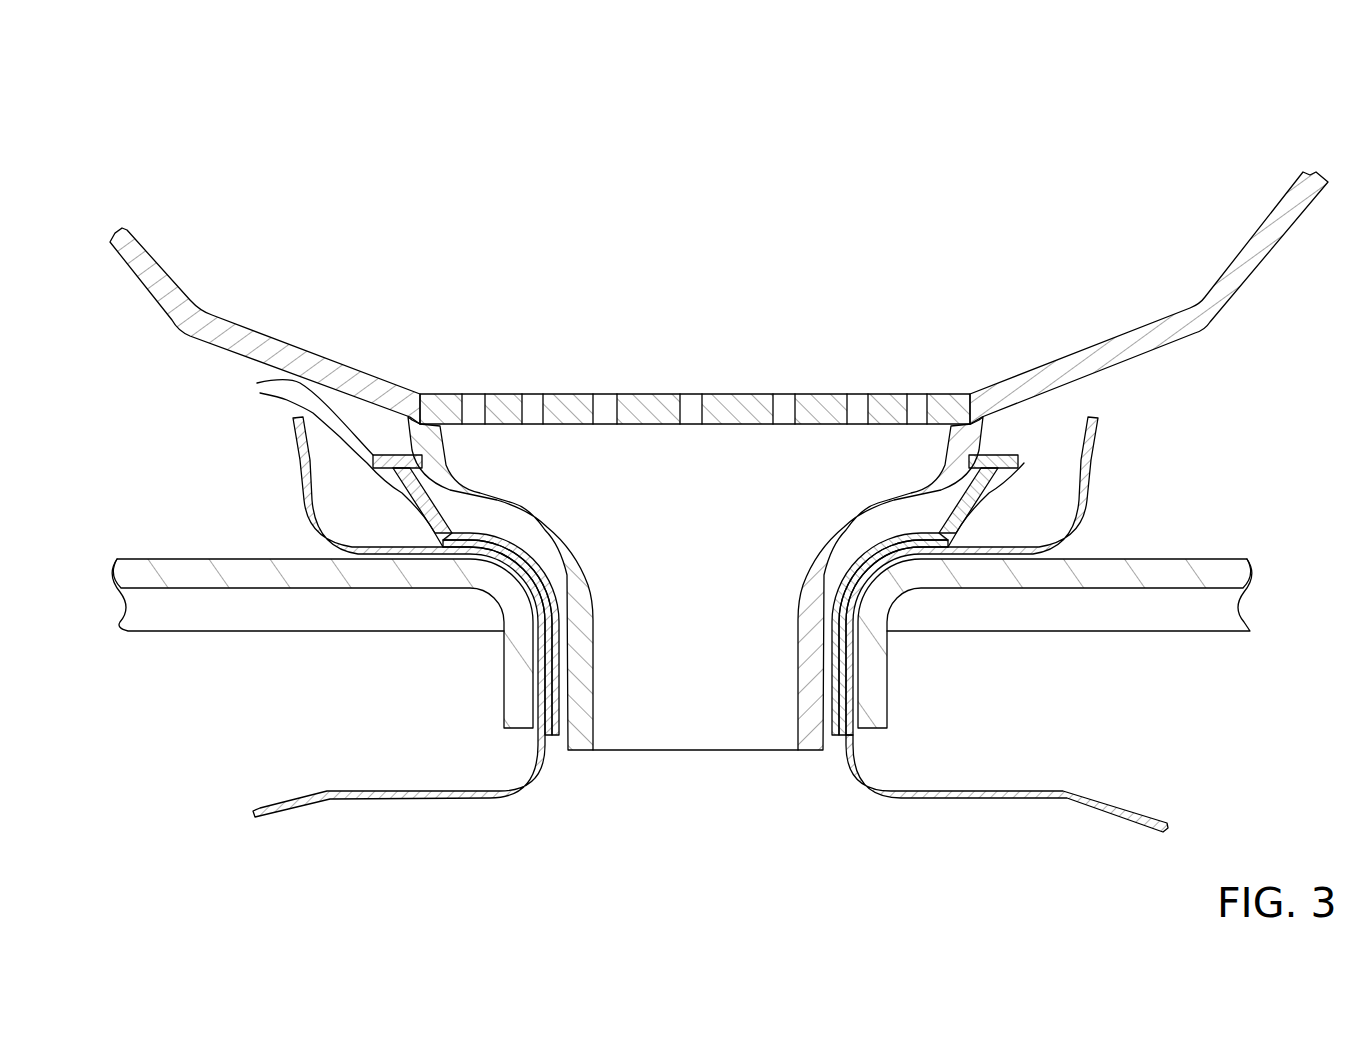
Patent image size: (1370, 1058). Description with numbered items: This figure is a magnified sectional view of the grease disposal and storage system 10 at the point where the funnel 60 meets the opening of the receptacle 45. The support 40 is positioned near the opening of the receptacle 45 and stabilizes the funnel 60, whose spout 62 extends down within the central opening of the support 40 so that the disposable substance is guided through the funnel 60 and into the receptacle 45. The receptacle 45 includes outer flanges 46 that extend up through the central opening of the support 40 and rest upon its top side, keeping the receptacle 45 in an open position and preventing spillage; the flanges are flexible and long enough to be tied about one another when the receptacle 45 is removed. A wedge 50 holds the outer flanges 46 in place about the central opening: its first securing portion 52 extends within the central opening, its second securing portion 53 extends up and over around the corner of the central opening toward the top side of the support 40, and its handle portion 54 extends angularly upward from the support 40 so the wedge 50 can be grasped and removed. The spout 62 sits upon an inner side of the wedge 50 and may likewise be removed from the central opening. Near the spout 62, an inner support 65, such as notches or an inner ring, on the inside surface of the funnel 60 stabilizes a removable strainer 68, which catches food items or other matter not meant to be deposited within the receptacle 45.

The grease disposal and storage system 10 is at (275, 155).
The support 40 is at (1158, 558).
The receptacle 45 is at (1100, 796).
The outer flanges 46 is at (300, 477).
The wedge 50 is at (260, 393).
The first securing portion 52 is at (838, 688).
The second securing portion 53 is at (1018, 455).
The handle portion 54 is at (257, 383).
The funnel 60 is at (1237, 255).
The spout 62 is at (565, 537).
The inner support 65 is at (947, 455).
The strainer 68 is at (747, 394).